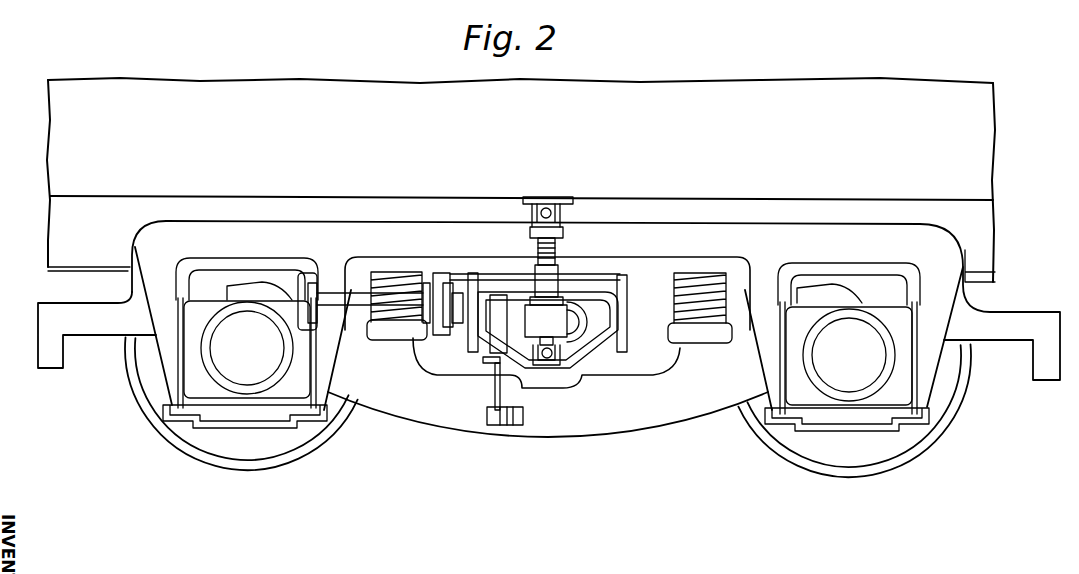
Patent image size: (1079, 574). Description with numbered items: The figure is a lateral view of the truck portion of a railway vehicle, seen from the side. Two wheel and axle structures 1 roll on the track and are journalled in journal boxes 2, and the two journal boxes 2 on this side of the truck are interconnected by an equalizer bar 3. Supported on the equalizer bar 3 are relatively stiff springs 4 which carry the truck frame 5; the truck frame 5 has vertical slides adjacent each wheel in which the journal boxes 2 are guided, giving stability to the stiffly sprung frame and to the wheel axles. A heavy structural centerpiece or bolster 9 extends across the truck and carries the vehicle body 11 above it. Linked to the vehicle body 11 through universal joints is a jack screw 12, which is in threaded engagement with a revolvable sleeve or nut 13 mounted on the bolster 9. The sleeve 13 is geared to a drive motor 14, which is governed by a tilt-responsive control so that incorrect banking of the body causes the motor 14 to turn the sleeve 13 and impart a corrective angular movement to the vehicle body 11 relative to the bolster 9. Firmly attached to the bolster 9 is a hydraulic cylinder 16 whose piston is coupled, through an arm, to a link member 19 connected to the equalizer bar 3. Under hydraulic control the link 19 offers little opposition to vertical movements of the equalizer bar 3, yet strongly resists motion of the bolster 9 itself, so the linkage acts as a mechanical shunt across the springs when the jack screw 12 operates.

The wheel and axle structure 1 is at (210, 443).
The journal box 2 is at (190, 363).
The equalizer bar 3 is at (265, 283).
The spring 4 is at (400, 272).
The truck frame 5 is at (808, 232).
The bolster 9 is at (589, 280).
The vehicle body 11 is at (983, 154).
The jack screw 12 is at (556, 257).
The revolvable sleeve or nut 13 is at (543, 273).
The drive motor 14 is at (568, 318).
The hydraulic cylinder 16 is at (498, 305).
The link member 19 is at (490, 393).